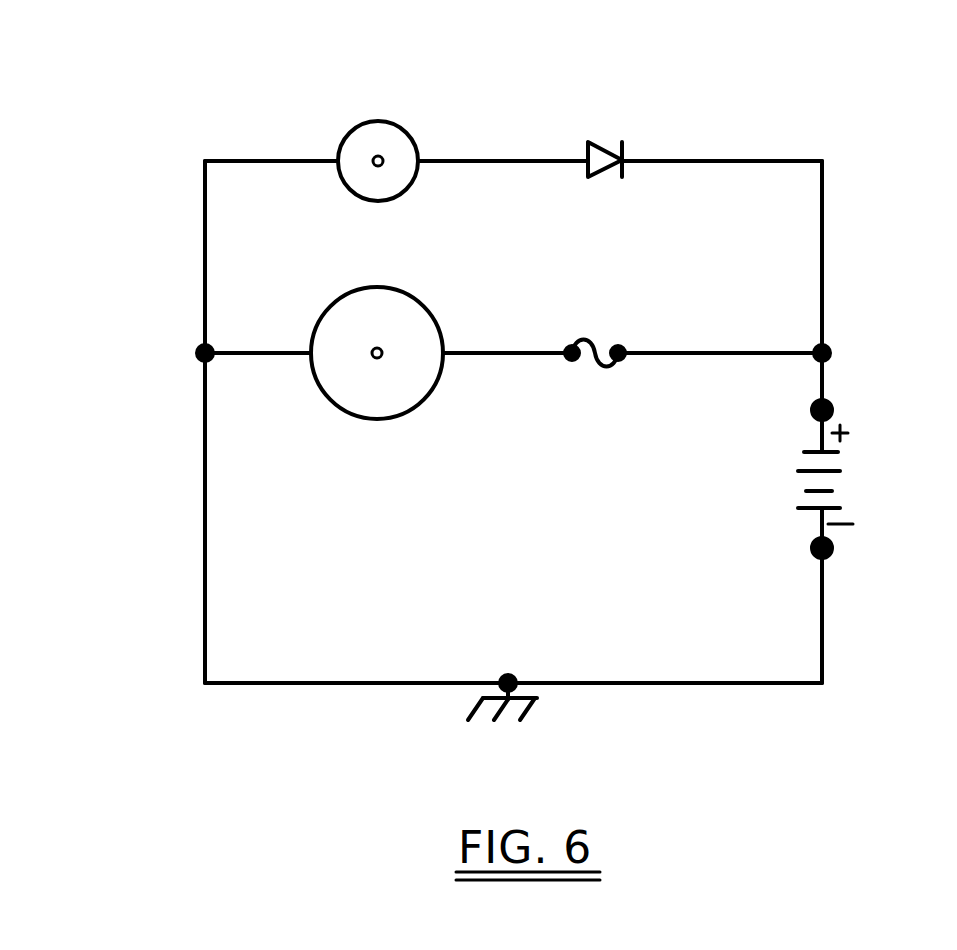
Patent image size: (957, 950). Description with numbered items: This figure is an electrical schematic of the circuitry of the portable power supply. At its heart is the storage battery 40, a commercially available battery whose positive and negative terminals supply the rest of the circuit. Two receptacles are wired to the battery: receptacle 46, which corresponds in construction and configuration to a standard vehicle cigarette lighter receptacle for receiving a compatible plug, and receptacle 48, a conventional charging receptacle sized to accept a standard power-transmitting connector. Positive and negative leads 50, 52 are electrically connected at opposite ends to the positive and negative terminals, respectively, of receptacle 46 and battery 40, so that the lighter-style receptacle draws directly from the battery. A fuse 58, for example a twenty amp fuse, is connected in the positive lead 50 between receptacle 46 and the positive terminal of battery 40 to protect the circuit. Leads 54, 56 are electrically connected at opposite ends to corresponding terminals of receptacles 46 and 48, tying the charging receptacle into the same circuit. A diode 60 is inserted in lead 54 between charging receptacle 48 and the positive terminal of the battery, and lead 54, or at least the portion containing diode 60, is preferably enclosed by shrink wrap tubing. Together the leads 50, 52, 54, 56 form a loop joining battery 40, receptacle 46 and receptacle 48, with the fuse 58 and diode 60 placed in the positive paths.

The storage battery 40 is at (828, 471).
The receptacle 46 is at (388, 418).
The receptacle 48 is at (397, 121).
The positive lead 50 is at (773, 355).
The negative lead 52 is at (822, 617).
The lead 54 is at (822, 222).
The lead 56 is at (205, 238).
The fuse 58 is at (600, 366).
The diode 60 is at (600, 145).